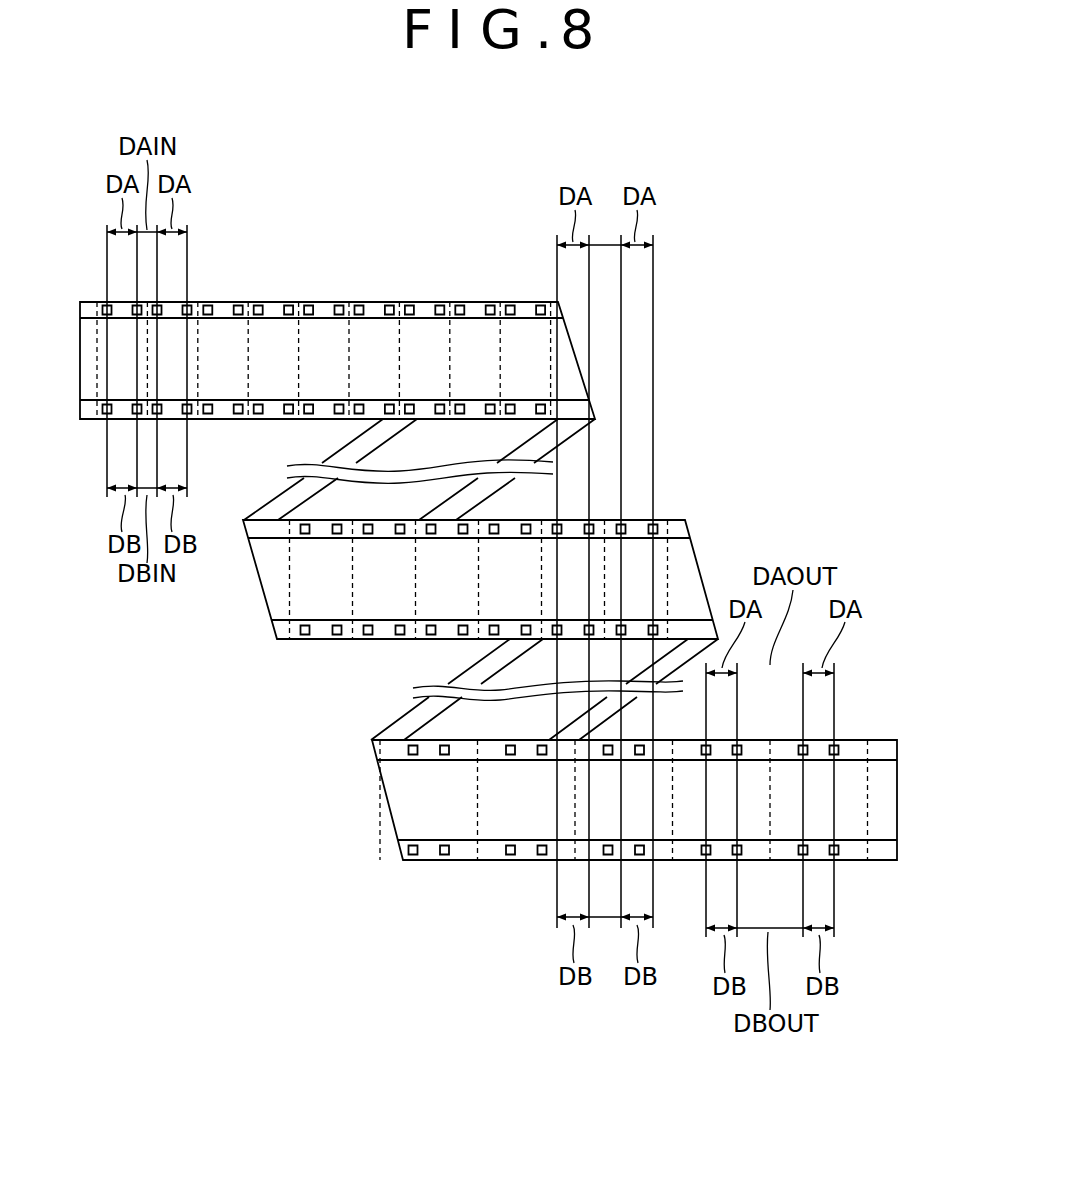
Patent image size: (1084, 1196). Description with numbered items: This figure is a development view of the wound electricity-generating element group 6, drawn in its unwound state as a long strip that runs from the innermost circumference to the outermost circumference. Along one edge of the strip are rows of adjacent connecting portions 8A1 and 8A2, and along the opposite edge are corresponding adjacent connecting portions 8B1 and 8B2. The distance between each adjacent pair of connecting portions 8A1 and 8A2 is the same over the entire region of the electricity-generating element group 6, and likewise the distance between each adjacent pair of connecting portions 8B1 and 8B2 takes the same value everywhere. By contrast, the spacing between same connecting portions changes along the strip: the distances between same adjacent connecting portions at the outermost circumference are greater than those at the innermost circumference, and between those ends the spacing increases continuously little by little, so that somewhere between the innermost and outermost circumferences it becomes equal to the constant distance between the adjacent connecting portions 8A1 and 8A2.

The electricity-generating element group 6 is at (665, 134).
The connecting portion 8A1 is at (501, 473).
The connecting portion 8A2 is at (470, 489).
The connecting portion 8B1 is at (469, 592).
The connecting portion 8B2 is at (470, 598).